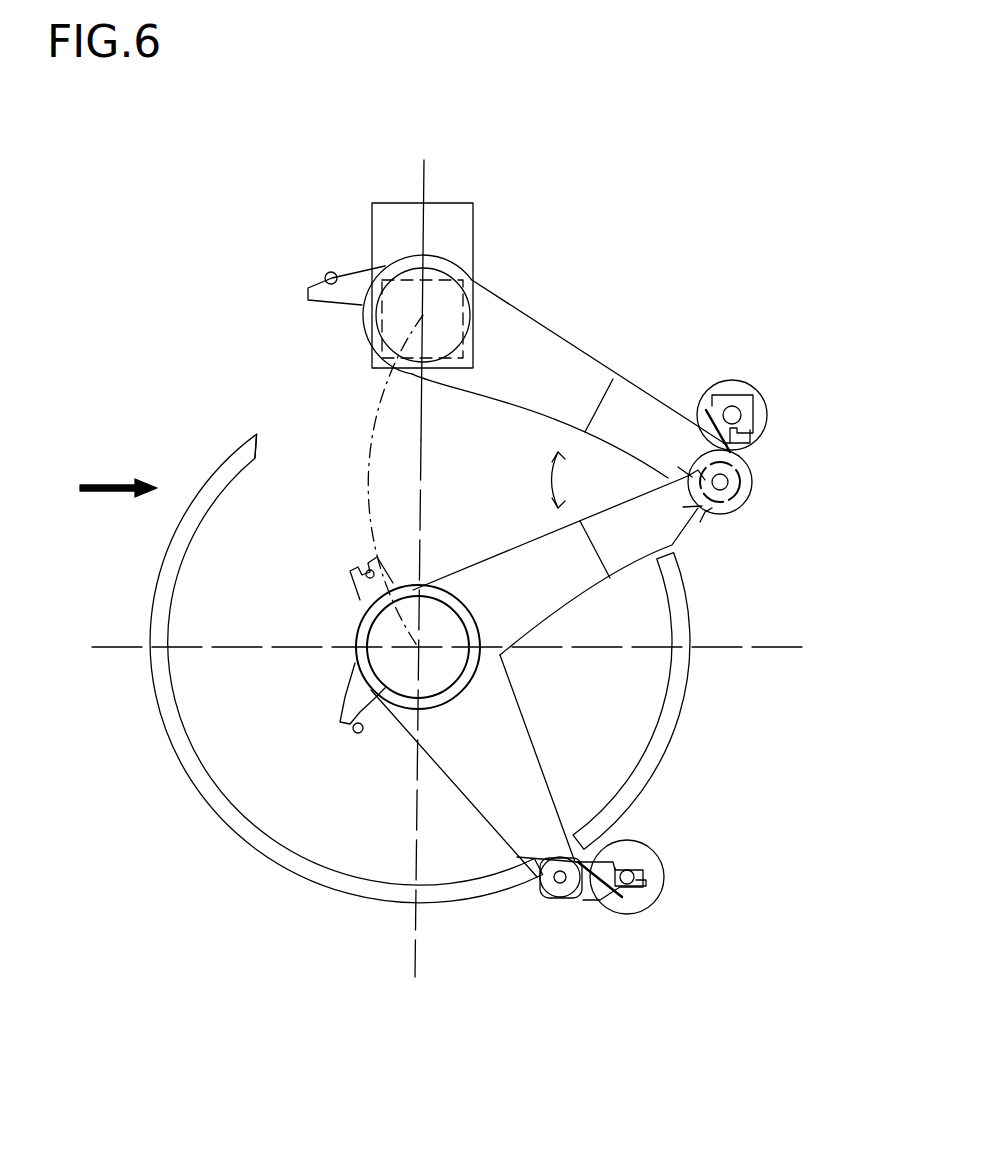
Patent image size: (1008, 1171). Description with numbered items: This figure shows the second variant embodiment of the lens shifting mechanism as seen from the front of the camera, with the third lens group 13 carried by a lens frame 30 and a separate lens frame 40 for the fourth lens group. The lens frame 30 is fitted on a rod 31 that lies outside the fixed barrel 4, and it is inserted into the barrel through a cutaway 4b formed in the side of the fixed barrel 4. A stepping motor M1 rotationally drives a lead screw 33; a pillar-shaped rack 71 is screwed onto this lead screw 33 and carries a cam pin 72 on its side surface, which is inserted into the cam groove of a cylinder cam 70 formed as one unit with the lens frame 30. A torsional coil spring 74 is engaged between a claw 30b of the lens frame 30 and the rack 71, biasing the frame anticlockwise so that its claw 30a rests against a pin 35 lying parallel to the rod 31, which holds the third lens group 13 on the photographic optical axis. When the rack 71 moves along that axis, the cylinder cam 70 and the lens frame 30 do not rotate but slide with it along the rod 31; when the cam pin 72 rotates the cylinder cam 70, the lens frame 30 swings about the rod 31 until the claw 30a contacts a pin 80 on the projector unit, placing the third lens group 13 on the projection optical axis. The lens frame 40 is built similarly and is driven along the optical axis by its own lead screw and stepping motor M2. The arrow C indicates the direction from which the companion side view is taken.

The fixed barrel 4 is at (218, 481).
The cutaway 4b is at (262, 446).
The third lens group 13 is at (443, 307).
The lens frame 30 is at (522, 392).
The claw 30a is at (340, 295).
The claw 30b is at (704, 515).
The rod 31 is at (729, 490).
The lead screw 33 is at (733, 405).
The rod (pin) for position determination 35 is at (360, 733).
The lens frame 40 is at (487, 787).
The cylinder cam 70 is at (754, 478).
The rack 71 is at (718, 400).
The cam pin 72 is at (737, 442).
The torsional coil spring 74 is at (722, 492).
The pin 80 is at (329, 272).
The stepping motor M1 is at (756, 392).
The second motor M2 is at (657, 870).
The viewing direction C is at (118, 473).